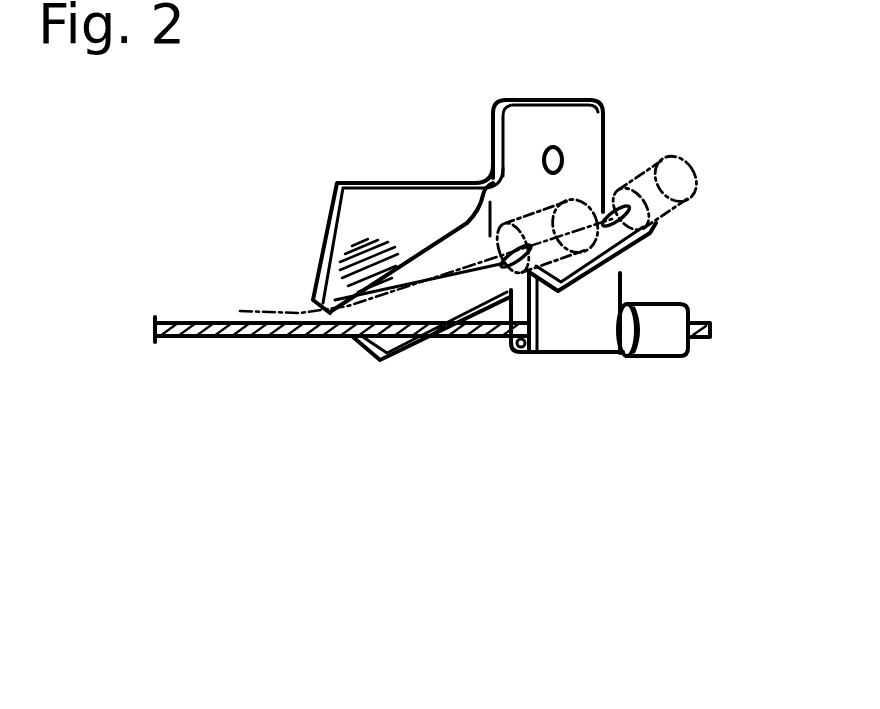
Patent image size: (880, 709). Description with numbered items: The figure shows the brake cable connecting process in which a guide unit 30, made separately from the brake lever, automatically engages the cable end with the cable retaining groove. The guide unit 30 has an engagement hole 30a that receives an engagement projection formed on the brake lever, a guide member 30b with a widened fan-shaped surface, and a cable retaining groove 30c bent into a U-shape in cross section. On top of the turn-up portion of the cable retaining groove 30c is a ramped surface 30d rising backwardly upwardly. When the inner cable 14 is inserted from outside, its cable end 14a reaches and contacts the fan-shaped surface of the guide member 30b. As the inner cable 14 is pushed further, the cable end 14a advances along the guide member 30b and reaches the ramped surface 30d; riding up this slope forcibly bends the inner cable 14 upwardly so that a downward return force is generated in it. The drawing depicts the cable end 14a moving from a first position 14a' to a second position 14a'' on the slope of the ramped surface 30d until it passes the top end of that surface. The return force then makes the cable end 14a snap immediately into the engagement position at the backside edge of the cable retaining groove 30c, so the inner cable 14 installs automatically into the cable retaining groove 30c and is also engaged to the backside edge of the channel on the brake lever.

The guide unit 30 is at (474, 99).
The engagement hole 30a is at (562, 150).
The guide member 30b is at (378, 343).
The cable retaining groove 30c is at (513, 343).
The ramped surface 30d is at (655, 240).
The inner cable 14 is at (253, 338).
The cable end 14a is at (684, 377).
The cable end (first position) 14a' is at (490, 188).
The cable end (second position) 14a'' is at (692, 155).